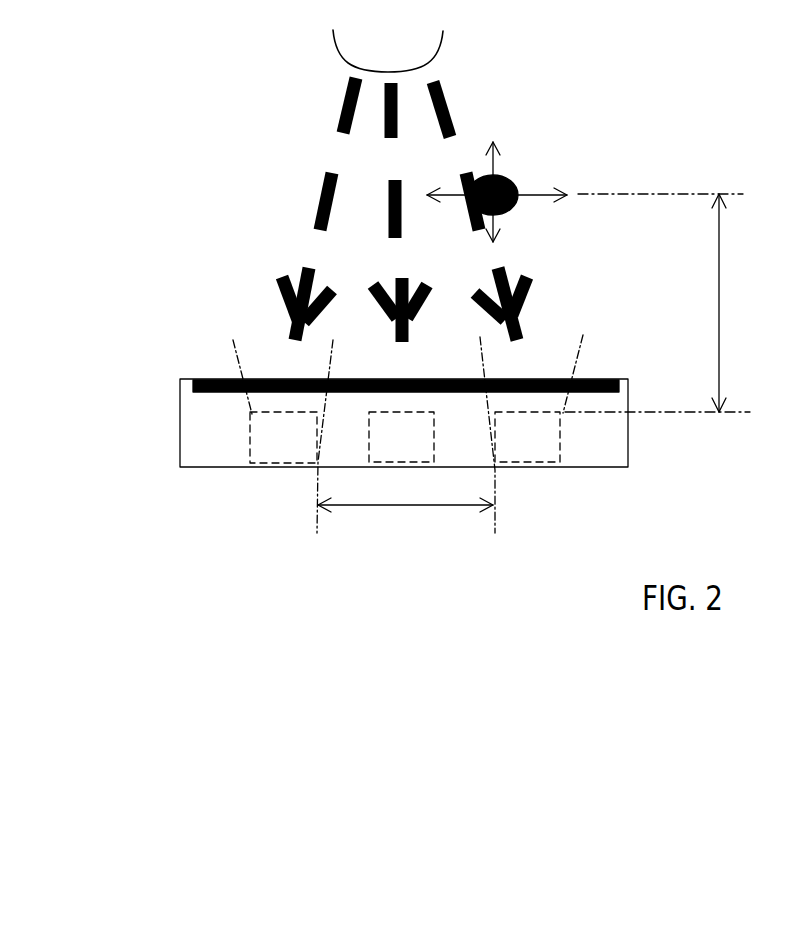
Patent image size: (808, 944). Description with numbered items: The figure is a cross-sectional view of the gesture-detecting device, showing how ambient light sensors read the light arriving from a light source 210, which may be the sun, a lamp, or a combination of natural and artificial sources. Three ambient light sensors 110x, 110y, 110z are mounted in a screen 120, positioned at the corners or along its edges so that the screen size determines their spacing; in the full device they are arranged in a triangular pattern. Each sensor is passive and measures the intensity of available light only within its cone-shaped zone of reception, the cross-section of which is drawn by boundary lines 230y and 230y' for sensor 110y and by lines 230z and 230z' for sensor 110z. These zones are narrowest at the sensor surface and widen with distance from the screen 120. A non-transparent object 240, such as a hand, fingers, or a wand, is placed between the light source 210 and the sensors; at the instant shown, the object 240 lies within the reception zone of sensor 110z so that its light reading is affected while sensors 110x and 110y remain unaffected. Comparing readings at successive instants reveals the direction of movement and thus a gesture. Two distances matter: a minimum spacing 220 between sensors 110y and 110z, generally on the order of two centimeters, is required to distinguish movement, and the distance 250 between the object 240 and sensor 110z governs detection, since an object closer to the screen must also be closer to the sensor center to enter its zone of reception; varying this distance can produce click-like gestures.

The light source 210 is at (416, 64).
The object 240 is at (510, 187).
The distance between the object and ALS 250 is at (675, 303).
The screen 120 is at (202, 378).
The zone of reception boundary 230y is at (217, 356).
The zone of reception boundary 230y' is at (344, 428).
The zone of reception boundary 230z is at (462, 426).
The zone of reception boundary 230z' is at (595, 355).
The ambient light sensor 110y is at (310, 450).
The ambient light sensor 110x is at (427, 450).
The ambient light sensor 110z is at (553, 450).
The distance between ALSs 220 is at (405, 527).